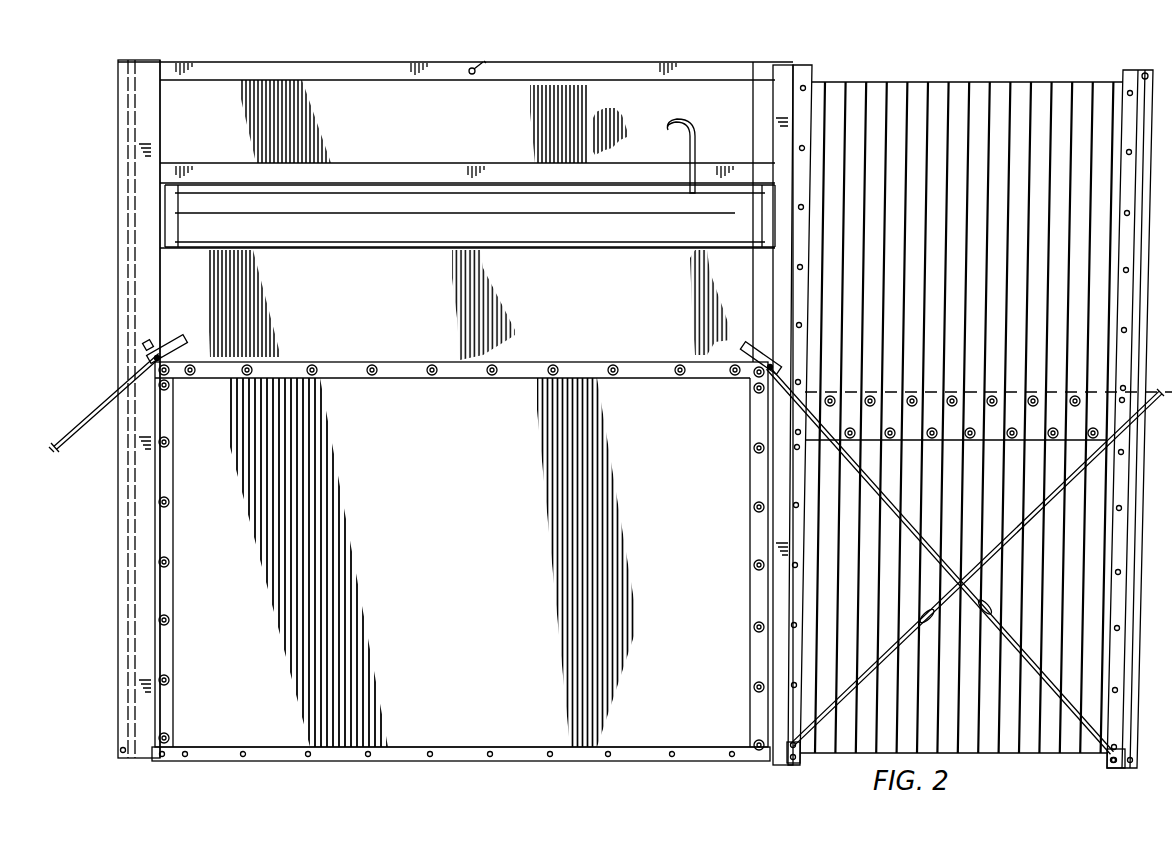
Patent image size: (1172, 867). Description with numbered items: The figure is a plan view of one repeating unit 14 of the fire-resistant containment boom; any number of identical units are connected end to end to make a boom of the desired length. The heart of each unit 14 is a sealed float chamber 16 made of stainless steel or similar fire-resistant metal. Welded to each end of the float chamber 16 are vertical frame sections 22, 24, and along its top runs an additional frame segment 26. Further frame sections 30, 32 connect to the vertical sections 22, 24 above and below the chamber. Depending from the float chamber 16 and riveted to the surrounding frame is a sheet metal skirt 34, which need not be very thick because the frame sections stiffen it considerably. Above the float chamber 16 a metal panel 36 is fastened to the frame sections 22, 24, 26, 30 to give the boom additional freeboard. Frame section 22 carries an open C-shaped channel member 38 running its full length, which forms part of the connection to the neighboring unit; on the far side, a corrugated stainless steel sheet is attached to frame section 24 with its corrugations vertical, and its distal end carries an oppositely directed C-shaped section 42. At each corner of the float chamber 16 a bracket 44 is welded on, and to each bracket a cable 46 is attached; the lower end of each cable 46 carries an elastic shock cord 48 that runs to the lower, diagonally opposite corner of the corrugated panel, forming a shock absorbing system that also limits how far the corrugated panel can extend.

The unit 14 is at (783, 774).
The float chamber 16 is at (410, 310).
The vertical frame section 22 is at (151, 117).
The vertical frame section 24 is at (781, 102).
The frame segment 26 is at (347, 165).
The frame section 30 is at (375, 78).
The frame section 32 is at (438, 747).
The skirt 34 is at (447, 586).
The metal panel 36 is at (462, 145).
The C-shaped channel member 38 is at (118, 484).
The C-shaped section 42 is at (1138, 125).
The bracket 44 is at (177, 338).
The cable 46 is at (112, 395).
The elastic cord 48 is at (822, 728).